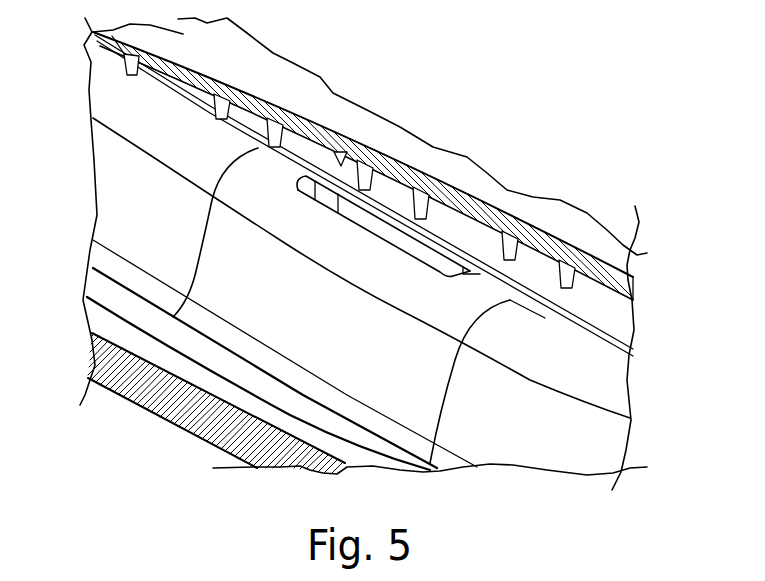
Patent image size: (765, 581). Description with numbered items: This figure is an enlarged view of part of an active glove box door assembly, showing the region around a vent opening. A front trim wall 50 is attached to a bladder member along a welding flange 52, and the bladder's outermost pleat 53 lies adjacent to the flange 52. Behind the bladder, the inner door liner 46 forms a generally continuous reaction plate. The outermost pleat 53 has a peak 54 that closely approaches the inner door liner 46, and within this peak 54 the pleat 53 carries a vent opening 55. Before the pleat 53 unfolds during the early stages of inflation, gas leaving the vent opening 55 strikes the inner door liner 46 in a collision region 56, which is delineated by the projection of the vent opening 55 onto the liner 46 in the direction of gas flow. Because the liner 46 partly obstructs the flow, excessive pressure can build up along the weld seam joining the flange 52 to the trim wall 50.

The door inner liner 46 is at (277, 87).
The front trim wall 50 is at (157, 397).
The welding flange 52 is at (343, 440).
The outermost pleat 53 is at (565, 403).
The peak 54 is at (553, 333).
The vent opening 55 is at (451, 264).
The collision region 56 is at (342, 165).